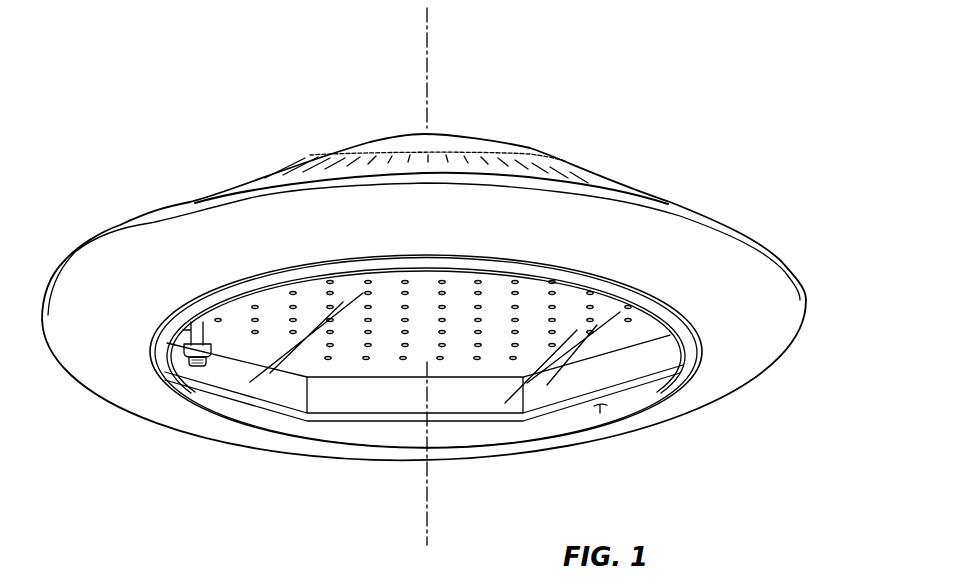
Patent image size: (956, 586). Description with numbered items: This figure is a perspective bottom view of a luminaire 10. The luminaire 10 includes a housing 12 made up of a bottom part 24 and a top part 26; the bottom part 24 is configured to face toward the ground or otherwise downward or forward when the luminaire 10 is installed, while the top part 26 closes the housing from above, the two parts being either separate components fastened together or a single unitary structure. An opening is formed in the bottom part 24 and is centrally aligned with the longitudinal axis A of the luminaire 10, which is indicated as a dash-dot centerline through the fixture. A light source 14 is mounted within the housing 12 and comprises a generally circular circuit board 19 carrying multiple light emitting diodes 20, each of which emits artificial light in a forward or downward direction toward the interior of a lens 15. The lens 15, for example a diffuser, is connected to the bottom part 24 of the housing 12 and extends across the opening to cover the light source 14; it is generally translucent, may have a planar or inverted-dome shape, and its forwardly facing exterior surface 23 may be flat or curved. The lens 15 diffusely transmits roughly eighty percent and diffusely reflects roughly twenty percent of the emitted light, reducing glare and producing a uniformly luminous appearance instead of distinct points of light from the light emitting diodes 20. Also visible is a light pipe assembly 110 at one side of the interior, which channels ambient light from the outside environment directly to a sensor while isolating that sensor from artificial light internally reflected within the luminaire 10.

The luminaire 10 is at (234, 76).
The housing 12 is at (786, 233).
The light source 14 is at (491, 376).
The lens 15 is at (546, 430).
The circuit board 19 is at (378, 356).
The light emitting diodes 20 is at (364, 359).
The exterior surface 23 is at (601, 414).
The bottom part 24 is at (761, 348).
The top part 26 is at (490, 148).
The light pipe assembly 110 is at (196, 381).
The longitudinal axis A is at (427, 50).